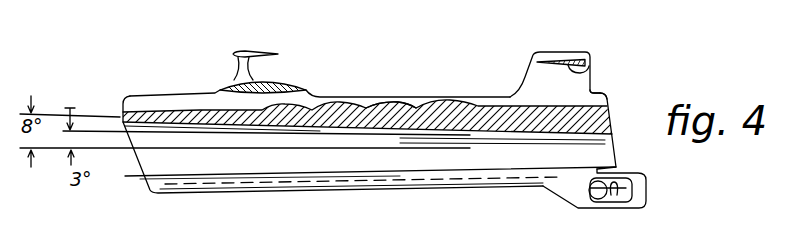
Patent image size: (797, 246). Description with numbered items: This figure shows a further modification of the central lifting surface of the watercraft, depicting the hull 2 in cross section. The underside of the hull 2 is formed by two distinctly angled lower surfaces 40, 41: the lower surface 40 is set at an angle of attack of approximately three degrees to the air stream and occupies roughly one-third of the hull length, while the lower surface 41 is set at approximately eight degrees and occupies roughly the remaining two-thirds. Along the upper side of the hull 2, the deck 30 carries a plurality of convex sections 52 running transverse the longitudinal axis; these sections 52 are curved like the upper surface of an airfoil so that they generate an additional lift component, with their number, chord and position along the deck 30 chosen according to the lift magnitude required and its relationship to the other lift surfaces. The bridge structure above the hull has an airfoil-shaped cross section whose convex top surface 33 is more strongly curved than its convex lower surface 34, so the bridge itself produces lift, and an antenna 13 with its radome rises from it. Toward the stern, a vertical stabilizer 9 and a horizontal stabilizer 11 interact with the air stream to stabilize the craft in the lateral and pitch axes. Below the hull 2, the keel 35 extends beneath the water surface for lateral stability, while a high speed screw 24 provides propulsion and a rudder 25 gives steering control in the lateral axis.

The hull 2 is at (612, 124).
The vertical stabilizer 9 is at (523, 83).
The horizontal stabilizer 11 is at (593, 62).
The antenna 13 is at (241, 51).
The high speed screw 24 is at (602, 183).
The rudder 25 is at (646, 193).
The deck 30 is at (600, 91).
The top surface 33 is at (281, 81).
The lower surface 34 is at (351, 105).
The keel 35 is at (265, 193).
The lower surface 40 is at (418, 134).
The lower surface 41 is at (232, 126).
The convex sections 52 is at (397, 104).